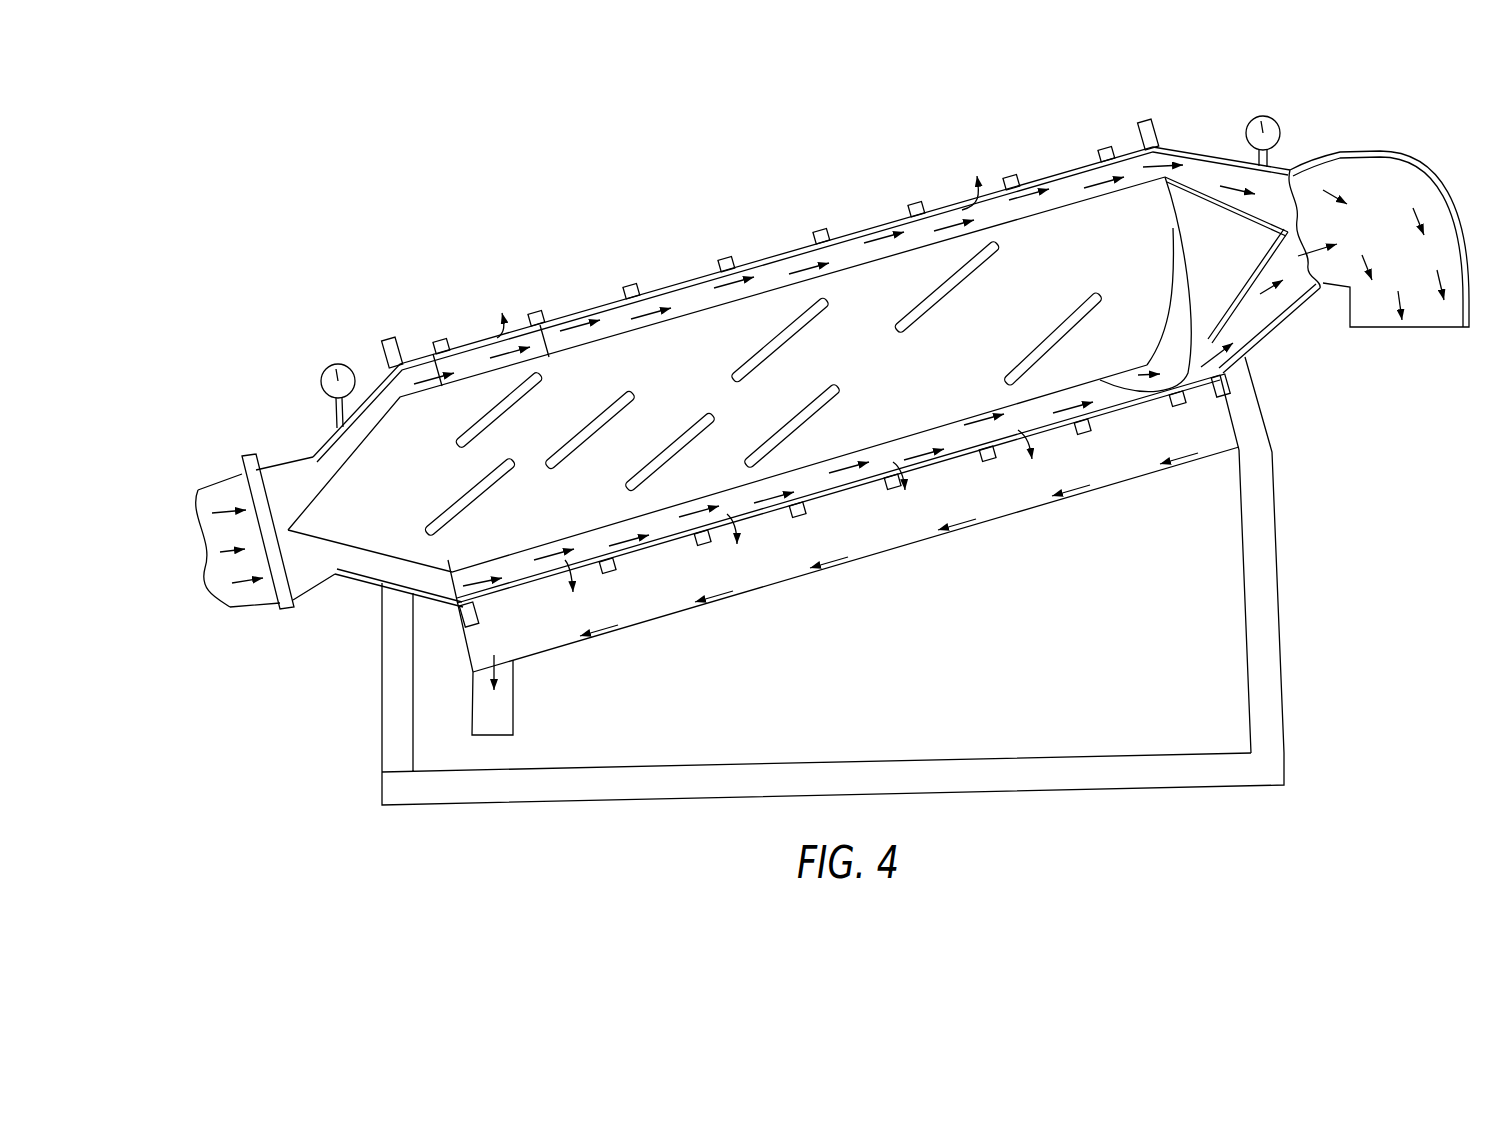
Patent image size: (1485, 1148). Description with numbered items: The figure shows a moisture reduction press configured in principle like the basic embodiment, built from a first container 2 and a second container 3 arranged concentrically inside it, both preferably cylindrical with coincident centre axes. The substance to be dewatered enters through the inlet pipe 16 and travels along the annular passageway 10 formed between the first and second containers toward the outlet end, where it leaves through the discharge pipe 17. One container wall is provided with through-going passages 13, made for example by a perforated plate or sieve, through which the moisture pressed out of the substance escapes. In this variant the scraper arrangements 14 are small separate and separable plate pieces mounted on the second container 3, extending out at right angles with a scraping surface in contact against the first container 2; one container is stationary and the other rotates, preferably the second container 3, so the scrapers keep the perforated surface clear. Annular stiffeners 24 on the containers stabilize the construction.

The first container 2 is at (574, 312).
The second container 3 is at (690, 308).
The annular passageway 10 is at (908, 238).
The through-going passages 13 is at (505, 335).
The scraper arrangements 14 is at (772, 343).
The inlet pipe 16 is at (218, 496).
The discharge pipe 17 is at (1360, 171).
The annular stiffeners 24 is at (822, 226).